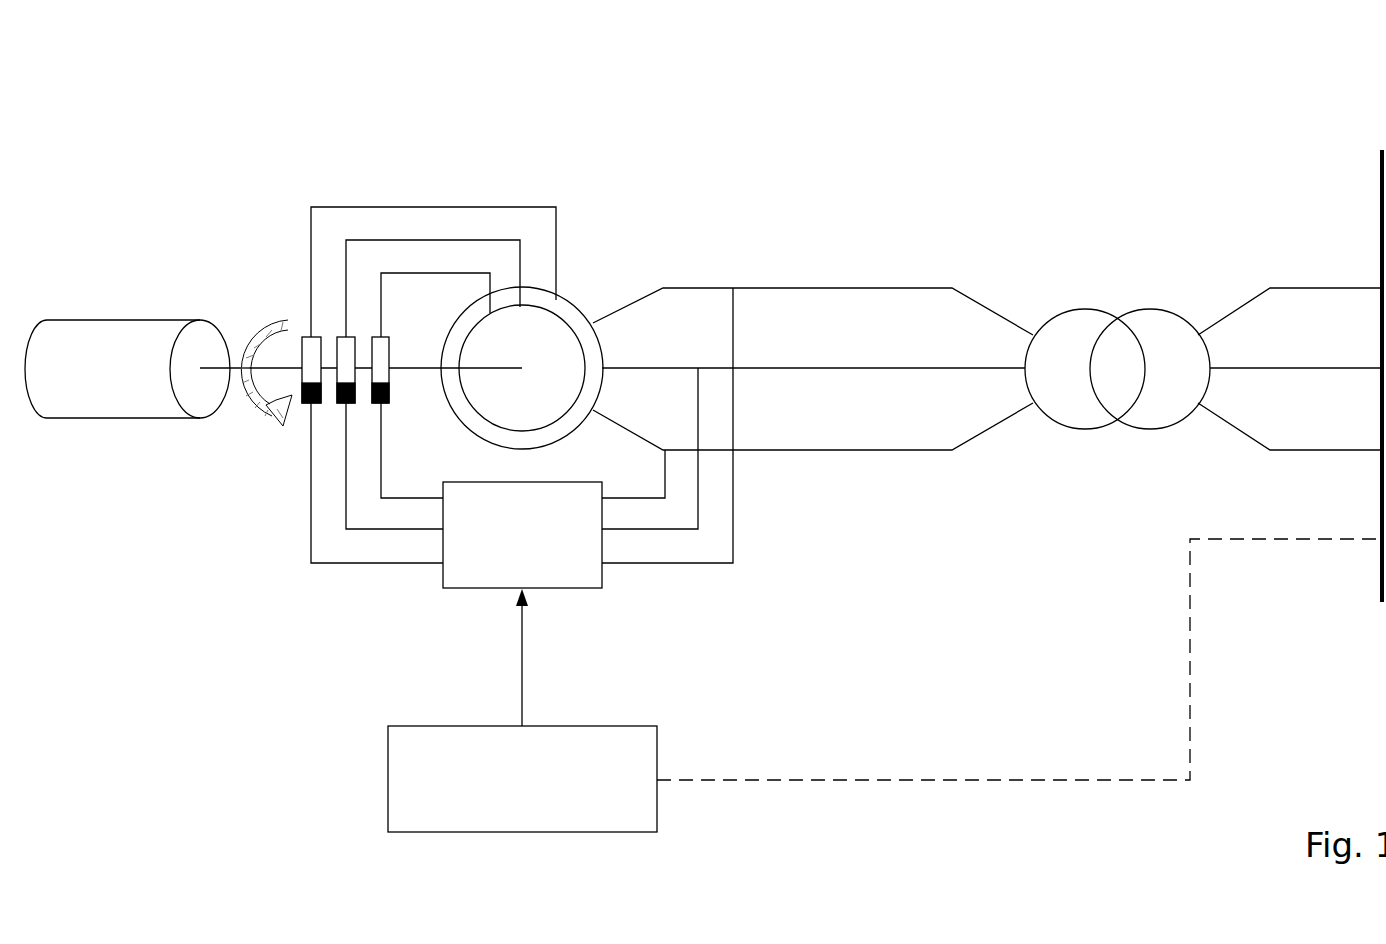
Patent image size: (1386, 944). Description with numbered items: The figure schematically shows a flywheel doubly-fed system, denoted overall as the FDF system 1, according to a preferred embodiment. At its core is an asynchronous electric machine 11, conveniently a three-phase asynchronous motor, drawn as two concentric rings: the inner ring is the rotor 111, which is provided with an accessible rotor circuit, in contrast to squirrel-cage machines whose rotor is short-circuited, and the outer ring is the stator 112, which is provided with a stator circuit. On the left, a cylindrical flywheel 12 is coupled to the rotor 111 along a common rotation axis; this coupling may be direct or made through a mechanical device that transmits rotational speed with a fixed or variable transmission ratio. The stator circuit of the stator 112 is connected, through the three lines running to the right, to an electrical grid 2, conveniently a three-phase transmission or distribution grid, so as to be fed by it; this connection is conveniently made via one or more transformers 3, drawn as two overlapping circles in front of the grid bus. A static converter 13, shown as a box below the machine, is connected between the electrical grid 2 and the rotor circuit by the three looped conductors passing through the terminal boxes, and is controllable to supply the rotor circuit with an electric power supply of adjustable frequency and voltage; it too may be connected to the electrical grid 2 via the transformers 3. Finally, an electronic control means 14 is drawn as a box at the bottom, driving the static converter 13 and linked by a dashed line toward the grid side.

The flywheel doubly-fed (FDF) system 1 is at (186, 159).
The electrical grid 2 is at (1380, 215).
The transformer 3 is at (1104, 476).
The asynchronous electric machine 11 is at (507, 304).
The rotor 111 is at (472, 408).
The stator 112 is at (593, 323).
The flywheel 12 is at (150, 330).
The static converter 13 is at (467, 583).
The electronic control means 14 is at (628, 742).